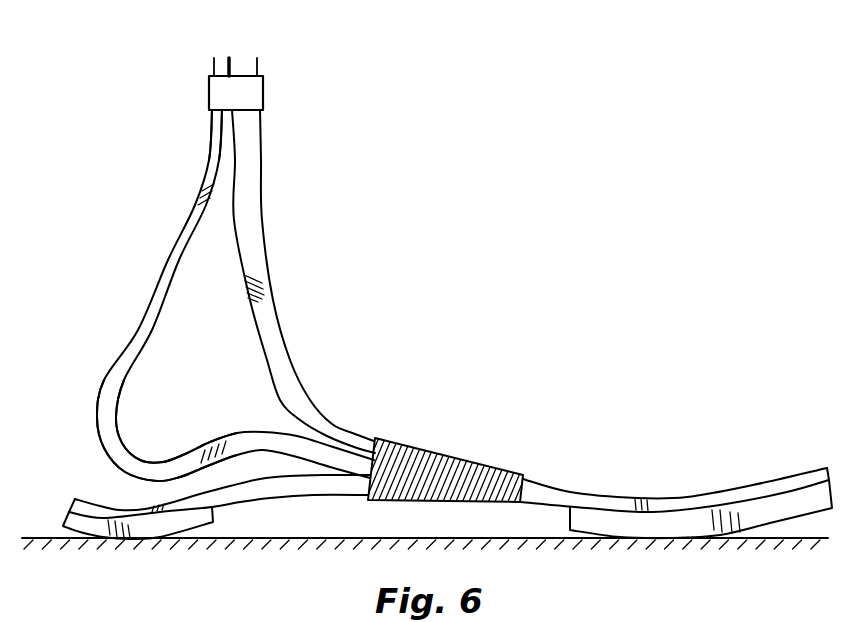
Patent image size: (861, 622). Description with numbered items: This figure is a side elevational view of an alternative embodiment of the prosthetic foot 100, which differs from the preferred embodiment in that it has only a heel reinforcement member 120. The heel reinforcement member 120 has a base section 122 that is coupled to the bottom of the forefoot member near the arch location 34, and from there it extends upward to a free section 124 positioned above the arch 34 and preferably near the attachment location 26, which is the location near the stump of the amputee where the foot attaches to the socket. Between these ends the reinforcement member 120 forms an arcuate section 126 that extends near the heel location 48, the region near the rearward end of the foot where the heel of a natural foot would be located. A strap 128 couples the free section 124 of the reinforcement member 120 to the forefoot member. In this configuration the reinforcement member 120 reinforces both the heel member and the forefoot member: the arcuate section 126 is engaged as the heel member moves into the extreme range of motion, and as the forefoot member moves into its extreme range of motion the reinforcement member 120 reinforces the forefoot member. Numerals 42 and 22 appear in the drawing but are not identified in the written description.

The prosthetic foot 100 is at (60, 268).
The attachment location 26 is at (257, 63).
The strap 128 is at (265, 97).
The free section 124 is at (217, 128).
The heel reinforcement member 120 is at (177, 257).
The arcuate section 126 is at (130, 443).
The base section 122 is at (320, 457).
The arch portion 34 is at (535, 487).
The sole plate 42 is at (261, 486).
The heel location 48 is at (75, 498).
The toe pad 22 is at (667, 507).